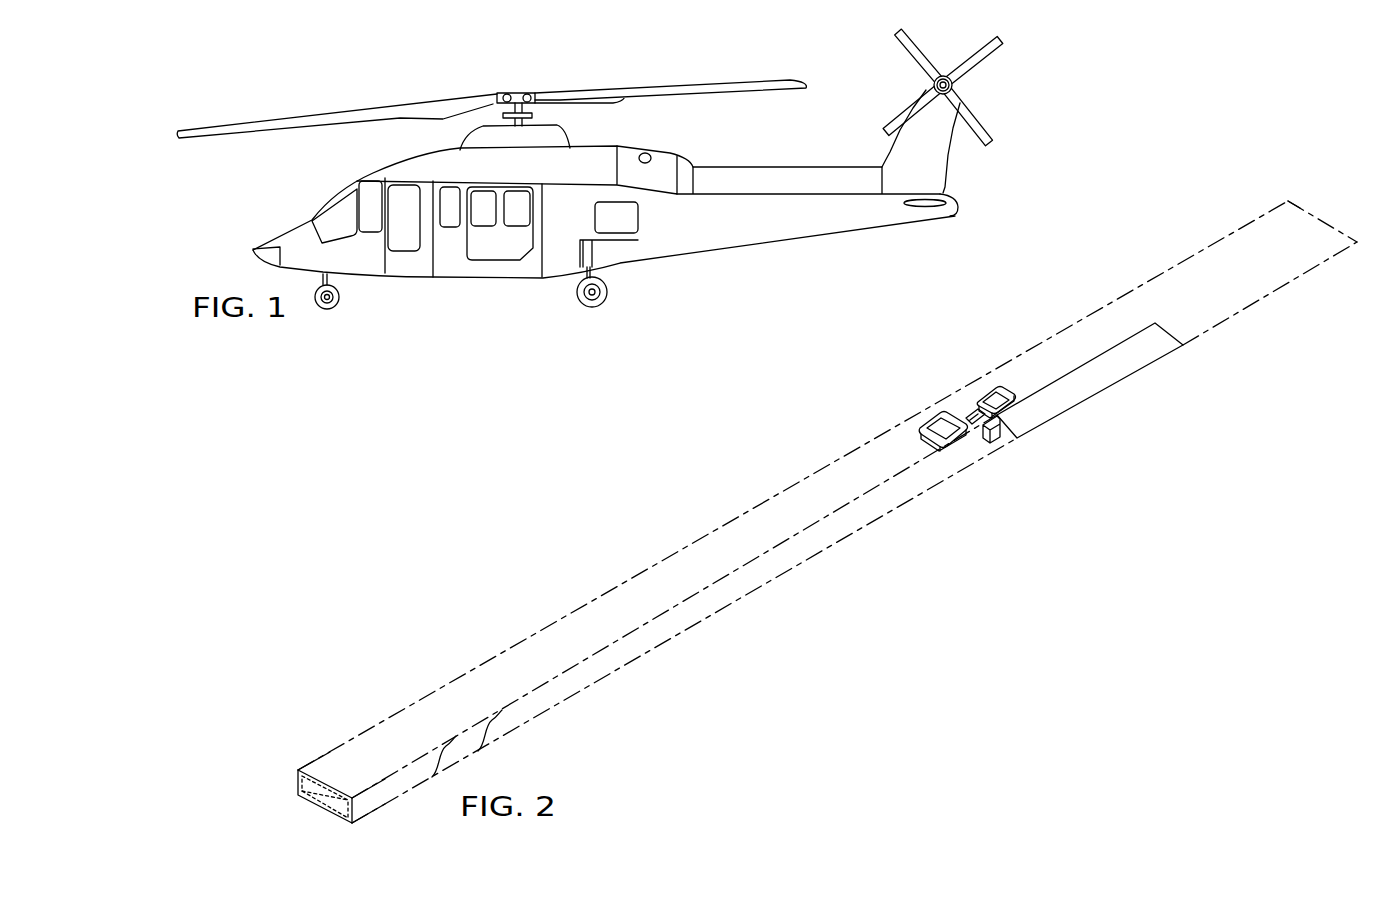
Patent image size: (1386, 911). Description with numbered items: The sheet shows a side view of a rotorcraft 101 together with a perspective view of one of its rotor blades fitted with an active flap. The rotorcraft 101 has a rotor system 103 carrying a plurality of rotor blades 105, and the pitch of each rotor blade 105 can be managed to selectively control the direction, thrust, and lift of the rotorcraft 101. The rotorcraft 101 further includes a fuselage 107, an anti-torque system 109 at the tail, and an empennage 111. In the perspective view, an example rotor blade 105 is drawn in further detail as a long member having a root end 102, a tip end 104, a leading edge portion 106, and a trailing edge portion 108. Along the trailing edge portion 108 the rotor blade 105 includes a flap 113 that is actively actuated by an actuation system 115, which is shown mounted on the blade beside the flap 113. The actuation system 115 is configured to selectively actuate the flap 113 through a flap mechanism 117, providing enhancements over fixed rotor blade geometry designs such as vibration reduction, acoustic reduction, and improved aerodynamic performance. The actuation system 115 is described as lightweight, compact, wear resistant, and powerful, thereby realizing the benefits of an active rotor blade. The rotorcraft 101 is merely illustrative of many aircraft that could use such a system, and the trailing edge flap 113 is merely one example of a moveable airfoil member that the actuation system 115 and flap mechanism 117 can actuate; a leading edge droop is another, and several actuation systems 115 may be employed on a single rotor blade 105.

In FIG. 1, the rotorcraft 101 is at (374, 78).
In FIG. 1, the rotor system 103 is at (528, 80).
In FIG. 1, the rotor blade 105 is at (743, 81).
In FIG. 2, the rotor blade 105 is at (1203, 247).
In FIG. 1, the fuselage 107 is at (457, 279).
In FIG. 1, the anti-torque system 109 is at (975, 86).
In FIG. 1, the empennage 111 is at (758, 243).
In FIG. 2, the root end 102 is at (318, 762).
In FIG. 2, the tip end 104 is at (1298, 200).
In FIG. 2, the leading edge portion 106 is at (655, 560).
In FIG. 2, the trailing edge portion 108 is at (845, 553).
In FIG. 2, the flap 113 is at (1128, 376).
In FIG. 2, the actuation system 115 is at (908, 442).
In FIG. 2, the flap mechanism 117 is at (1015, 505).